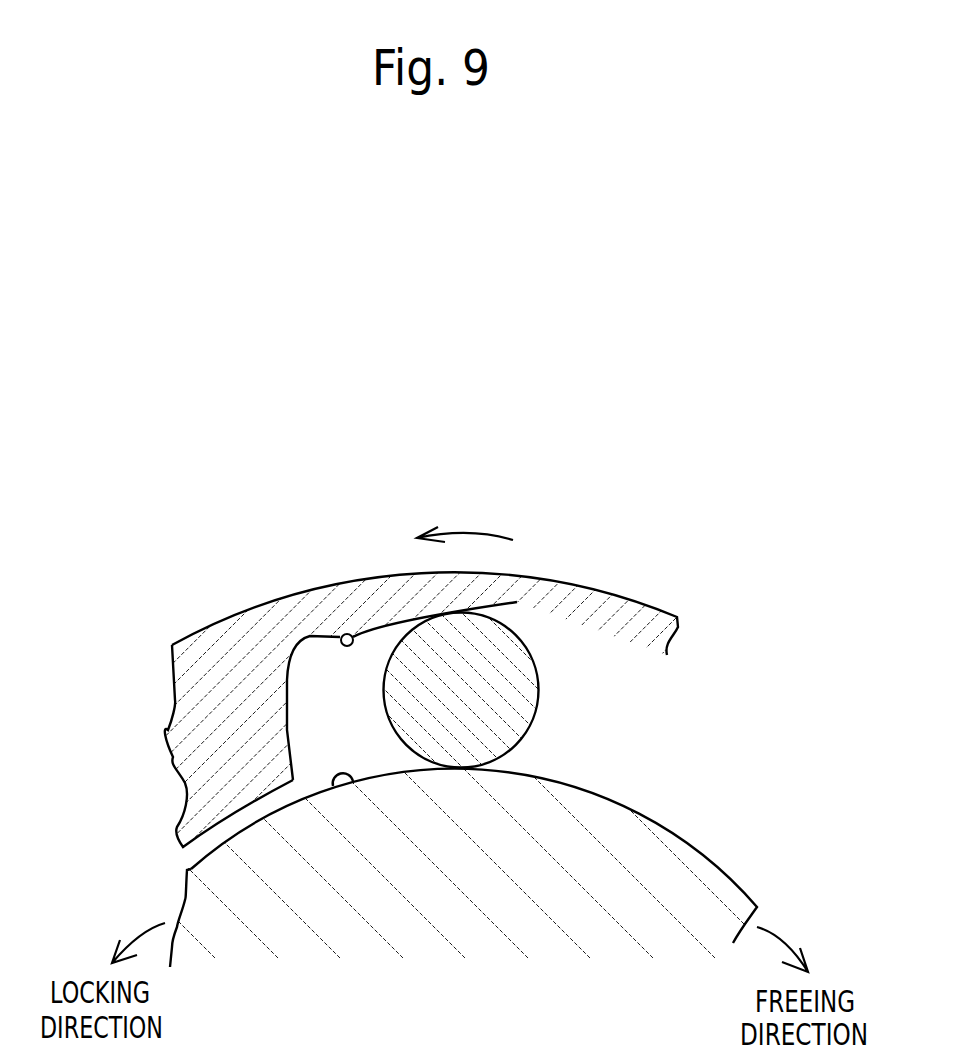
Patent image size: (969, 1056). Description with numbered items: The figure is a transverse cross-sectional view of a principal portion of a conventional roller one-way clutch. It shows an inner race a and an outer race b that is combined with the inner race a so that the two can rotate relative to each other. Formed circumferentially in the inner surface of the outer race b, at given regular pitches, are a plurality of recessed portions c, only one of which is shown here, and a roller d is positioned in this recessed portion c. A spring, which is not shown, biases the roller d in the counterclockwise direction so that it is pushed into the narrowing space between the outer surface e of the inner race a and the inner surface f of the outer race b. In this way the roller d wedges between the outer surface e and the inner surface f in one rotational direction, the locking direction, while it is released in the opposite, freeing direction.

The inner race a is at (197, 862).
The outer race b is at (200, 630).
The recessed portion c is at (355, 705).
The roller d is at (536, 668).
The outer surface of the inner race e is at (333, 788).
The inner surface of the outer race f is at (344, 634).